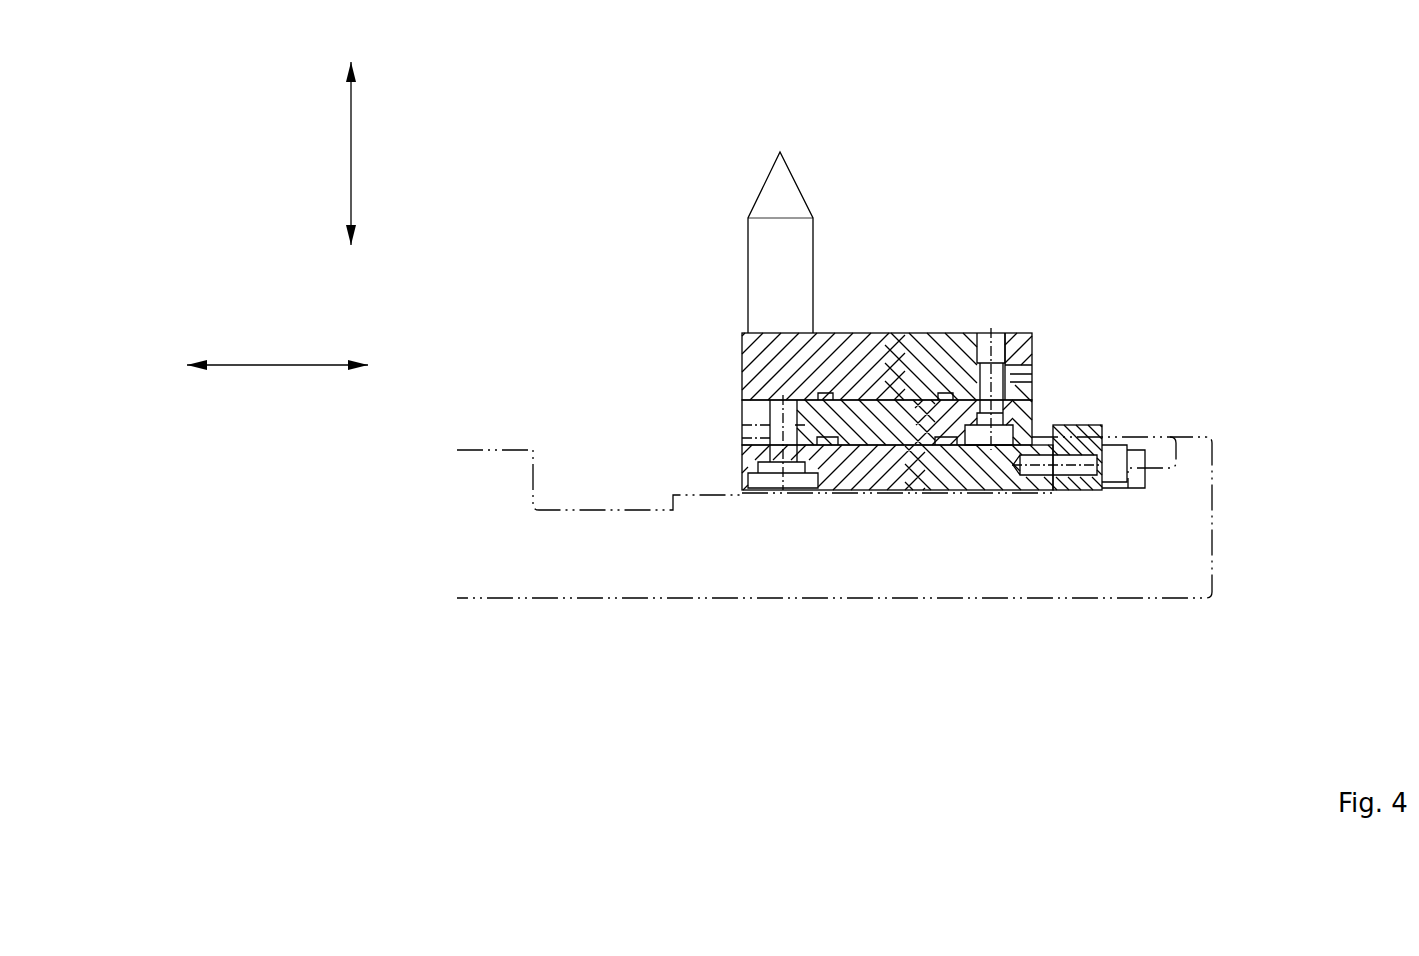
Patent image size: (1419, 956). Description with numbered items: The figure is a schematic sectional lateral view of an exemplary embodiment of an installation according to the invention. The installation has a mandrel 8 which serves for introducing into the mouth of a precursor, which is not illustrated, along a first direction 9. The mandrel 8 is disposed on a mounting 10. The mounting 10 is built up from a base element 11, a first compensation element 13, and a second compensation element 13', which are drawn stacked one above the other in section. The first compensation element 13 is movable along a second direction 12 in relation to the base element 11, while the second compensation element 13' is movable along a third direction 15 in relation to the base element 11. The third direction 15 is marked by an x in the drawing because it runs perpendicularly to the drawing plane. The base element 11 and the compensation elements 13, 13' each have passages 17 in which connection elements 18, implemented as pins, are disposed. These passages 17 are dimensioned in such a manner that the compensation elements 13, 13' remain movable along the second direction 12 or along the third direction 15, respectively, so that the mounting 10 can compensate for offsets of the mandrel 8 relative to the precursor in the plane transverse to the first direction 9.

The mandrel 8 is at (789, 274).
The first direction 9 is at (359, 153).
The mounting 10 is at (1092, 198).
The base element 11 is at (920, 490).
The second direction 12 is at (277, 380).
The first compensation element 13 is at (1009, 398).
The second compensation element 13' is at (965, 365).
The third direction 15 is at (238, 228).
The passages 17 is at (745, 413).
The connection elements 18 is at (978, 348).